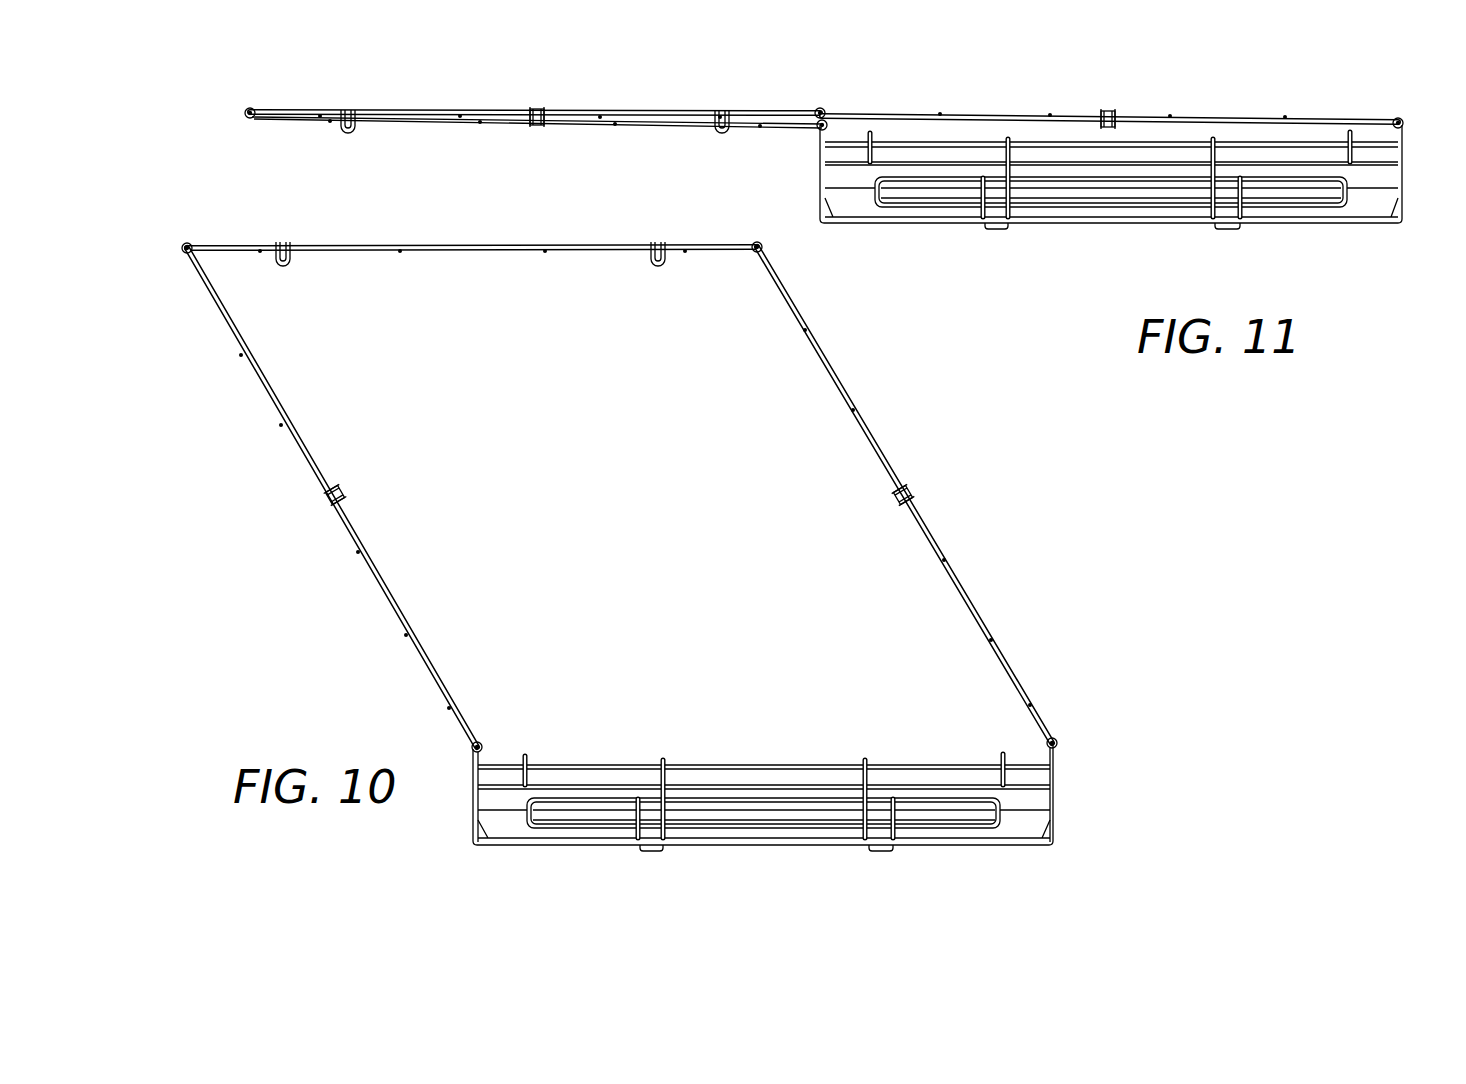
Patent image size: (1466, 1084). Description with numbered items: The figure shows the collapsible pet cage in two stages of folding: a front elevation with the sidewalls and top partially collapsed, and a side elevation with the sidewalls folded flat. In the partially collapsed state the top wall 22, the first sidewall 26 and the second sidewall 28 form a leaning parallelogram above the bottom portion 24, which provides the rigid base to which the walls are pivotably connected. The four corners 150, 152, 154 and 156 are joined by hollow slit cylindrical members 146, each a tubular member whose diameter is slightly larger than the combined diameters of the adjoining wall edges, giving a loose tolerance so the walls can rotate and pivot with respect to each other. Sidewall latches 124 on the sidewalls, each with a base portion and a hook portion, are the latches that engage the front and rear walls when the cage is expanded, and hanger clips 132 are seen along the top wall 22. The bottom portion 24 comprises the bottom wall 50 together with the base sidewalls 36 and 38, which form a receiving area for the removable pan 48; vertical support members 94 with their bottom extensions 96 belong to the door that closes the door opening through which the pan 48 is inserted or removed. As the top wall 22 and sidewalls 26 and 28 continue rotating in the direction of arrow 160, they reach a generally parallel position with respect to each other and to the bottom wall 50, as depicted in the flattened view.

In FIG. 10, the top wall 22 is at (590, 252).
In FIG. 11, the top wall 22 is at (618, 110).
In FIG. 10, the bottom portion 24 is at (764, 746).
In FIG. 11, the bottom portion 24 is at (1111, 174).
In FIG. 10, the first sidewall 26 is at (975, 610).
In FIG. 11, the first sidewall 26 is at (1325, 120).
In FIG. 10, the second sidewall 28 is at (385, 590).
In FIG. 11, the second sidewall 28 is at (623, 128).
In FIG. 10, the base sidewall 36 is at (1055, 800).
In FIG. 10, the base sidewall 38 is at (473, 826).
In FIG. 10, the removable pan 48 is at (1027, 832).
In FIG. 11, the removable pan 48 is at (1377, 212).
In FIG. 10, the bottom wall 50 is at (770, 841).
In FIG. 11, the bottom wall 50 is at (1137, 223).
In FIG. 10, the vertical support members 94 is at (660, 772).
In FIG. 11, the vertical support members 94 is at (1003, 150).
In FIG. 10, the bottom extension 96 is at (646, 850).
In FIG. 11, the bottom extension 96 is at (997, 230).
In FIG. 10, the sidewall latch 124 is at (346, 490).
In FIG. 11, the sidewall latch 124 is at (1108, 111).
In FIG. 10, the hanger clip 132 is at (284, 266).
In FIG. 11, the hanger clip 132 is at (349, 132).
In FIG. 10, the hollow slit cylindrical member 146 is at (186, 242).
In FIG. 11, the hollow slit cylindrical member 146 is at (244, 113).
In FIG. 10, the corner 150 is at (749, 241).
In FIG. 11, the corner 150 is at (830, 108).
In FIG. 10, the corner 152 is at (1056, 730).
In FIG. 11, the corner 152 is at (1391, 113).
In FIG. 10, the corner 154 is at (466, 748).
In FIG. 11, the corner 154 is at (814, 136).
In FIG. 10, the corner 156 is at (196, 242).
In FIG. 11, the corner 156 is at (265, 107).
In FIG. 10, the arrow 160 is at (567, 543).